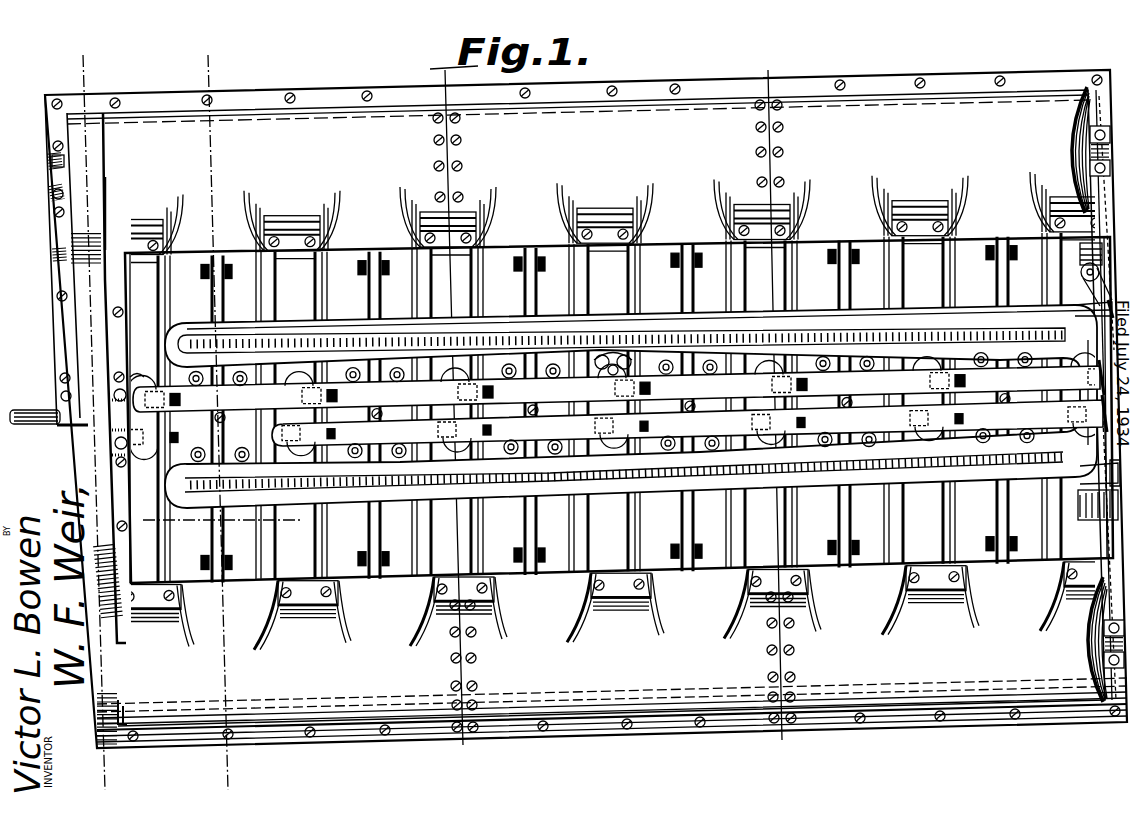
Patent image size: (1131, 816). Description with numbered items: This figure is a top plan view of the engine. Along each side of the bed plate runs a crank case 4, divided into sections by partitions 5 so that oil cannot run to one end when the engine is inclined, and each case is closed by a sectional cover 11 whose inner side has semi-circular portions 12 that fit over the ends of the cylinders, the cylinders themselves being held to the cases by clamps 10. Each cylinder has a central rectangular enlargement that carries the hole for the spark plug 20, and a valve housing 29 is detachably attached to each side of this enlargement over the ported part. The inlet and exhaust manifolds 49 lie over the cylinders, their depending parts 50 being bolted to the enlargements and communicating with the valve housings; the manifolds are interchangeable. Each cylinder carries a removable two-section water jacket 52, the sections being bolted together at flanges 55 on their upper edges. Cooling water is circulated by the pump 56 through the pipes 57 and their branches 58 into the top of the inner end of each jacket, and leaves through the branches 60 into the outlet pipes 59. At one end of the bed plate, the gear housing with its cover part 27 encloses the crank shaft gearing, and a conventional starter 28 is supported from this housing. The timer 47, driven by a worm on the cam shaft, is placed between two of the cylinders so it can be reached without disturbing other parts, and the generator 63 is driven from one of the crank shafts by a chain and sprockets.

The crank case 4 is at (199, 64).
The partitions 5 is at (74, 64).
The clamps 10 is at (300, 530).
The sectional cover 11 is at (690, 110).
The semi-circular portions 12 is at (652, 198).
The spark plug 20 is at (236, 413).
The cover part 27 is at (77, 349).
The starter 28 is at (130, 717).
The valve housing 29 is at (157, 422).
The timer 47 is at (600, 347).
The inlet and exhaust manifolds 49 is at (624, 407).
The depending parts 50 is at (330, 358).
The water jacket 52 is at (609, 410).
The flanges 55 is at (1010, 505).
The pump 56 is at (1082, 250).
The pipes 57 is at (696, 347).
The branches 58 is at (165, 398).
The outlet pipes 59 is at (398, 323).
The branches 60 is at (240, 337).
The generator 63 is at (1082, 503).